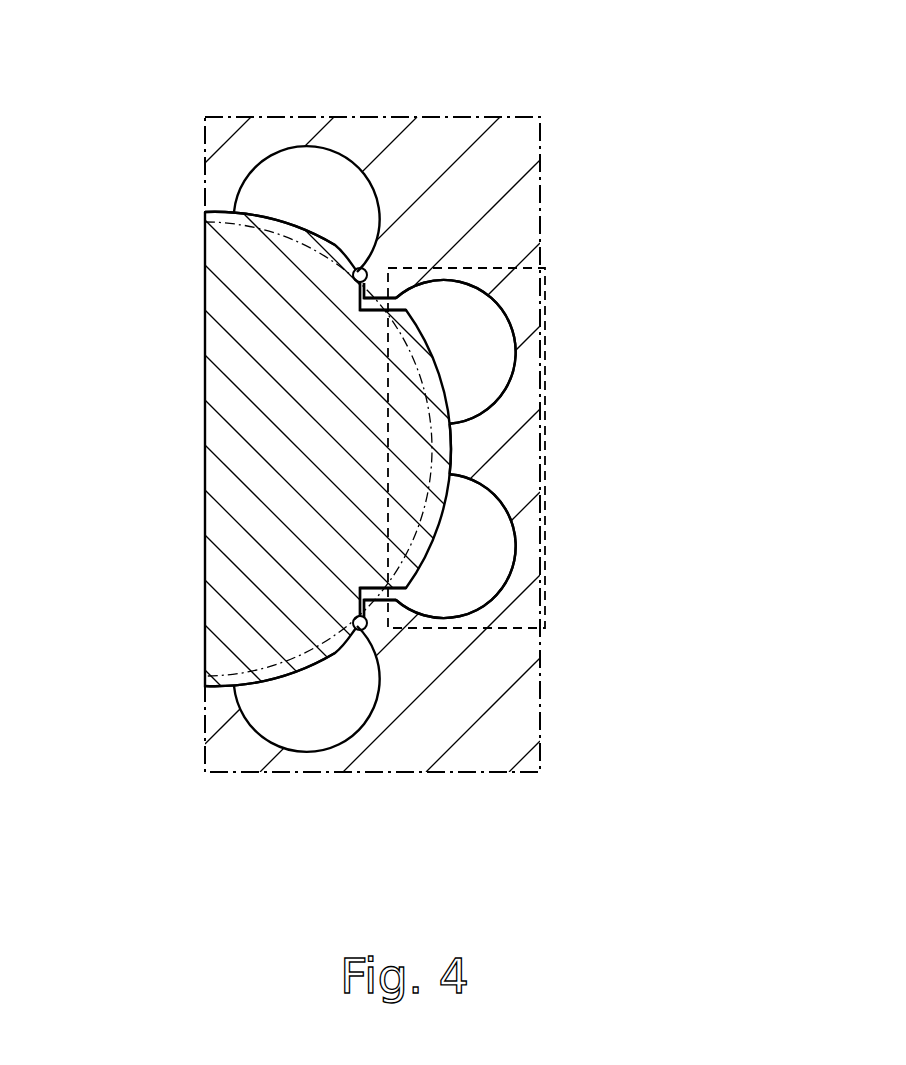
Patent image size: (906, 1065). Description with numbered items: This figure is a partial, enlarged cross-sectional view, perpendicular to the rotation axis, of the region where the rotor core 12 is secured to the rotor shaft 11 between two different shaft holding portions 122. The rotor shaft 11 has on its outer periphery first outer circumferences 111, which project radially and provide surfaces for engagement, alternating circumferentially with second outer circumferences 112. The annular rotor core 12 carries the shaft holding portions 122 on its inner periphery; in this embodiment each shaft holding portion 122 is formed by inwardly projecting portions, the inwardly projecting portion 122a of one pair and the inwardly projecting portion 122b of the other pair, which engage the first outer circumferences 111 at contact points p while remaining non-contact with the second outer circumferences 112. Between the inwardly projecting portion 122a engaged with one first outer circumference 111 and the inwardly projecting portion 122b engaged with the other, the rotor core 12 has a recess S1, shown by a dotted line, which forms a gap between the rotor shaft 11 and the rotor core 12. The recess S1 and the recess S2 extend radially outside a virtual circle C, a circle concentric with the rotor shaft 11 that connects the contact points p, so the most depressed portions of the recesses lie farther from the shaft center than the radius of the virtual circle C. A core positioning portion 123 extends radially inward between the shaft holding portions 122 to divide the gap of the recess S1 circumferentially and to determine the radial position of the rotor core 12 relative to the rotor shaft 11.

The rotor shaft 11 is at (252, 455).
The rotor core 12 is at (413, 155).
The first outer circumference 111 is at (255, 260).
The second outer circumference 112 is at (418, 498).
The shaft holding portion 122 is at (562, 470).
The inwardly projecting portion 122a is at (375, 278).
The inwardly projecting portion 122b is at (374, 626).
The core positioning portion 123 is at (465, 445).
The recess S1 is at (470, 330).
The recess S2 is at (318, 178).
The contact point p is at (368, 270).
The gap g is at (404, 301).
The virtual circle C is at (232, 686).